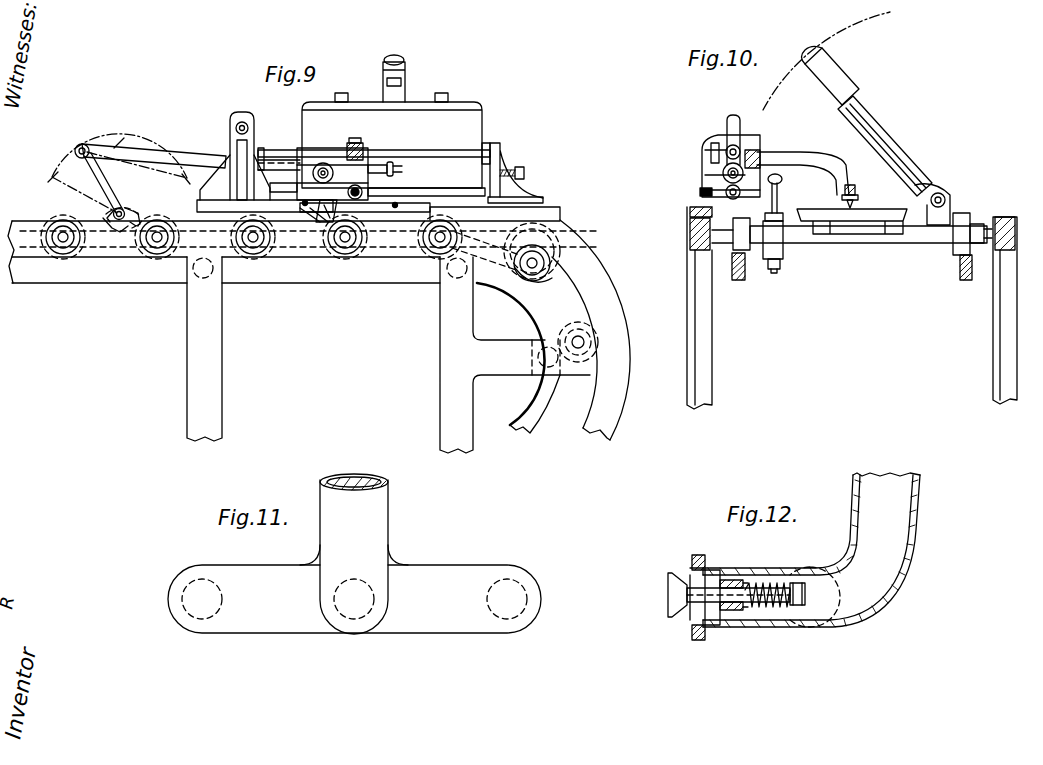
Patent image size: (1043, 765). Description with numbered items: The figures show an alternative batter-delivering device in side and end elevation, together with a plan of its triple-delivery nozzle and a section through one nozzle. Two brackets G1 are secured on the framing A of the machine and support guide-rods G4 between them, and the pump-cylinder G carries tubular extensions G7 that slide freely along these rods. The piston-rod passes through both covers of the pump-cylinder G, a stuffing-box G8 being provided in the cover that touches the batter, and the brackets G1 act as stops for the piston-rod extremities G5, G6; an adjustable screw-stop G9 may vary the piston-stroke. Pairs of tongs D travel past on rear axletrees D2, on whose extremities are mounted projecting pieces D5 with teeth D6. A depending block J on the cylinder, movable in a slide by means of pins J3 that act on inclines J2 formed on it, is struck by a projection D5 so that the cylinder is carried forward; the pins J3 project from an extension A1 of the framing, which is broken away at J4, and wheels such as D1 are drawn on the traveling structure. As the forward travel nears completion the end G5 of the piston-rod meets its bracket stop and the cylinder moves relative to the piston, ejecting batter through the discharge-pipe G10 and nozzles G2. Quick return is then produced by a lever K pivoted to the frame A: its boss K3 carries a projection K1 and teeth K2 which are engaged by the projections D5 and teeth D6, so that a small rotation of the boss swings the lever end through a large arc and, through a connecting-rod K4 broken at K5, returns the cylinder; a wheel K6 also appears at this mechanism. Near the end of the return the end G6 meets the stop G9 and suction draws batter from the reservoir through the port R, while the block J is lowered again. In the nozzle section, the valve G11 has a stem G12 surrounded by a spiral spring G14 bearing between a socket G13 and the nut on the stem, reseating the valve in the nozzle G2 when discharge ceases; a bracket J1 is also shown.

In FIG. 9, the framing A is at (319, 336).
In FIG. 10, the framing A is at (852, 308).
In FIG. 9, the extension of the framing A1 is at (562, 213).
In FIG. 10, the extension of the framing A1 is at (690, 212).
In FIG. 9, the tongs D is at (392, 151).
In FIG. 10, the tongs D is at (880, 66).
In FIG. 9, the carriage wheel D1 is at (240, 233).
In FIG. 9, the rear axletrees D2 is at (538, 275).
In FIG. 10, the rear axletrees D2 is at (722, 250).
In FIG. 9, the projecting pieces D5 is at (78, 237).
In FIG. 9, the teeth D6 is at (176, 237).
In FIG. 10, the teeth D6 is at (712, 238).
In FIG. 9, the pump-cylinder G is at (300, 163).
In FIG. 10, the pump-cylinder G is at (710, 162).
In FIG. 9, the brackets G1 is at (238, 120).
In FIG. 10, the brackets G1 is at (735, 115).
In FIG. 10, the nozzles G2 is at (858, 198).
In FIG. 11, the nozzles G2 is at (200, 598).
In FIG. 12, the nozzles G2 is at (690, 626).
In FIG. 9, the guide-rods G4 is at (483, 152).
In FIG. 10, the guide-rods G4 is at (740, 148).
In FIG. 9, the extremity of the piston-rod G5 is at (262, 150).
In FIG. 9, the extremity of the piston-rod G6 is at (402, 171).
In FIG. 10, the extremity of the piston-rod G6 is at (744, 173).
In FIG. 9, the tubular extensions G7 is at (300, 158).
In FIG. 10, the tubular extensions G7 is at (752, 155).
In FIG. 9, the stuffing-box G8 is at (357, 152).
In FIG. 9, the adjustable screw-stop G9 is at (525, 174).
In FIG. 10, the discharge-pipe G10 is at (808, 152).
In FIG. 11, the discharge-pipe G10 is at (354, 554).
In FIG. 12, the discharge-pipe G10 is at (805, 550).
In FIG. 10, the valves G11 is at (848, 203).
In FIG. 12, the valves G11 is at (668, 590).
In FIG. 10, the valve stems G12 is at (856, 186).
In FIG. 12, the valve stems G12 is at (772, 608).
In FIG. 12, the sockets G13 is at (735, 612).
In FIG. 12, the spiral springs G14 is at (784, 585).
In FIG. 9, the depending block J is at (426, 200).
In FIG. 10, the depending block J is at (758, 218).
In FIG. 9, the bracket link J1 is at (332, 203).
In FIG. 9, the inclines J2 is at (322, 222).
In FIG. 10, the inclines J2 is at (690, 226).
In FIG. 9, the pins J3 is at (342, 208).
In FIG. 9, the break in the framing extension J4 is at (555, 210).
In FIG. 9, the lever K is at (103, 182).
In FIG. 9, the projection K1 is at (104, 220).
In FIG. 9, the teeth K2 is at (138, 218).
In FIG. 9, the boss K3 is at (124, 210).
In FIG. 9, the connecting-rod K4 is at (119, 166).
In FIG. 10, the connecting-rod K4 is at (713, 142).
In FIG. 9, the break in the connecting-rod K5 is at (150, 150).
In FIG. 9, the gear wheel K6 is at (325, 163).
In FIG. 10, the port R is at (700, 190).